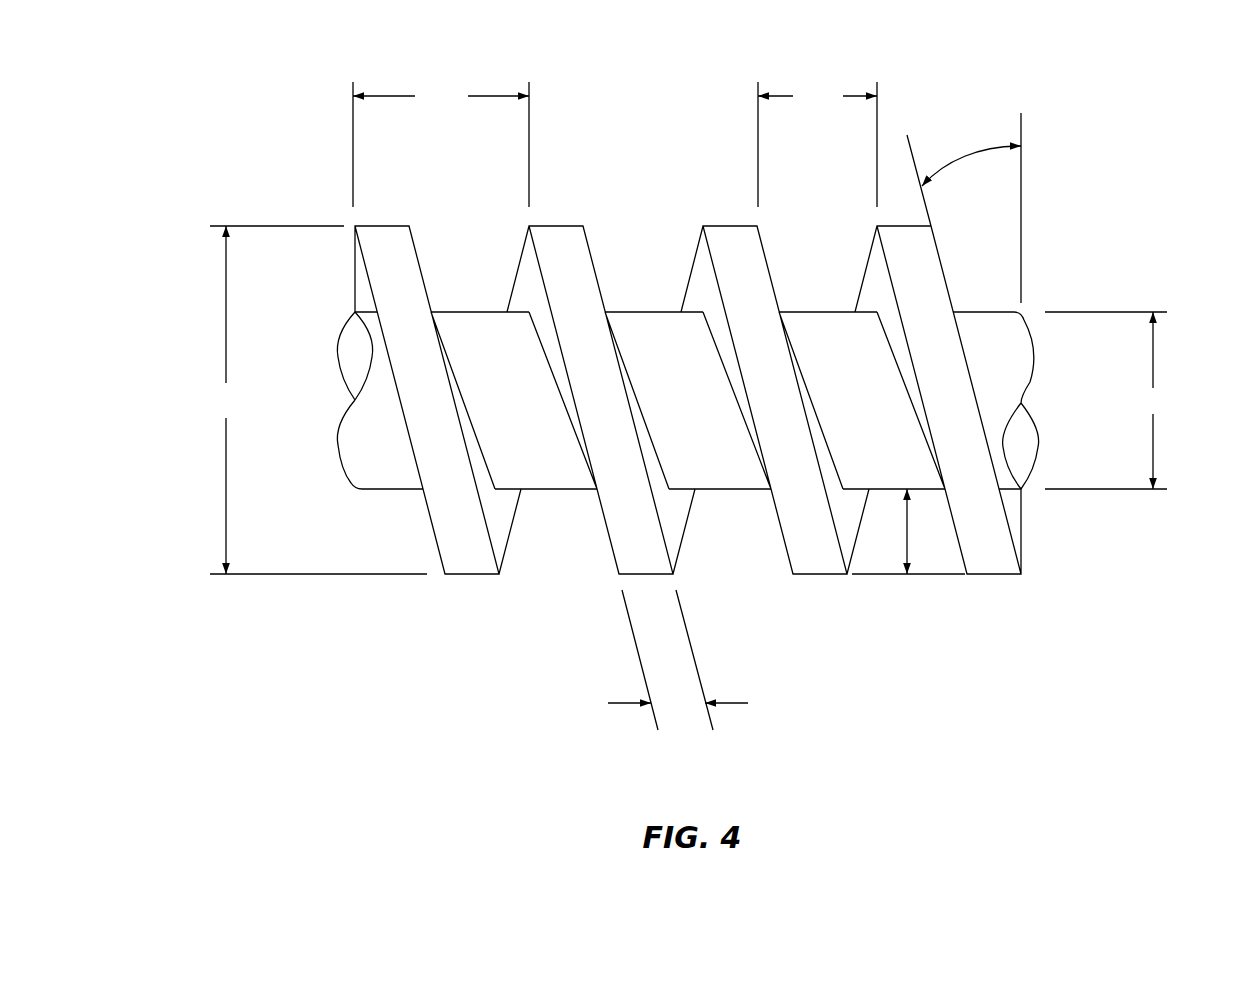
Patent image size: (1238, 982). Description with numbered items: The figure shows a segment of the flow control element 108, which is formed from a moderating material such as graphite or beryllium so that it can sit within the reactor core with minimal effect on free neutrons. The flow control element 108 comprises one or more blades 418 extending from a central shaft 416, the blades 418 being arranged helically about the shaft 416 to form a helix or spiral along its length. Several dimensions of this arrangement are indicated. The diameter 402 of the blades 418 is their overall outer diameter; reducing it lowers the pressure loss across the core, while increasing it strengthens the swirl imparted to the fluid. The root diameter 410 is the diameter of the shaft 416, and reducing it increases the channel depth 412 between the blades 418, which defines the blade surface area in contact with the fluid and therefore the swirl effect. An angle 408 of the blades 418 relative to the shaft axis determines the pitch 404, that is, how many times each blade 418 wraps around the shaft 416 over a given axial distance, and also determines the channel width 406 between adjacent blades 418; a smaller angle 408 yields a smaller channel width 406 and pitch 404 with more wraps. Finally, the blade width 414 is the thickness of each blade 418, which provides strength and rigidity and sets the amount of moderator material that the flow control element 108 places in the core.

The flow control element 108 is at (216, 103).
The diameter of the blades 402 is at (316, 400).
The pitch 404 is at (441, 144).
The channel width 406 is at (817, 144).
The angle of the blades 408 is at (1000, 208).
The root diameter 410 is at (1109, 400).
The channel depth 412 is at (908, 550).
The blade width 414 is at (703, 660).
The shaft 416 is at (1008, 365).
The blades 418 is at (457, 575).